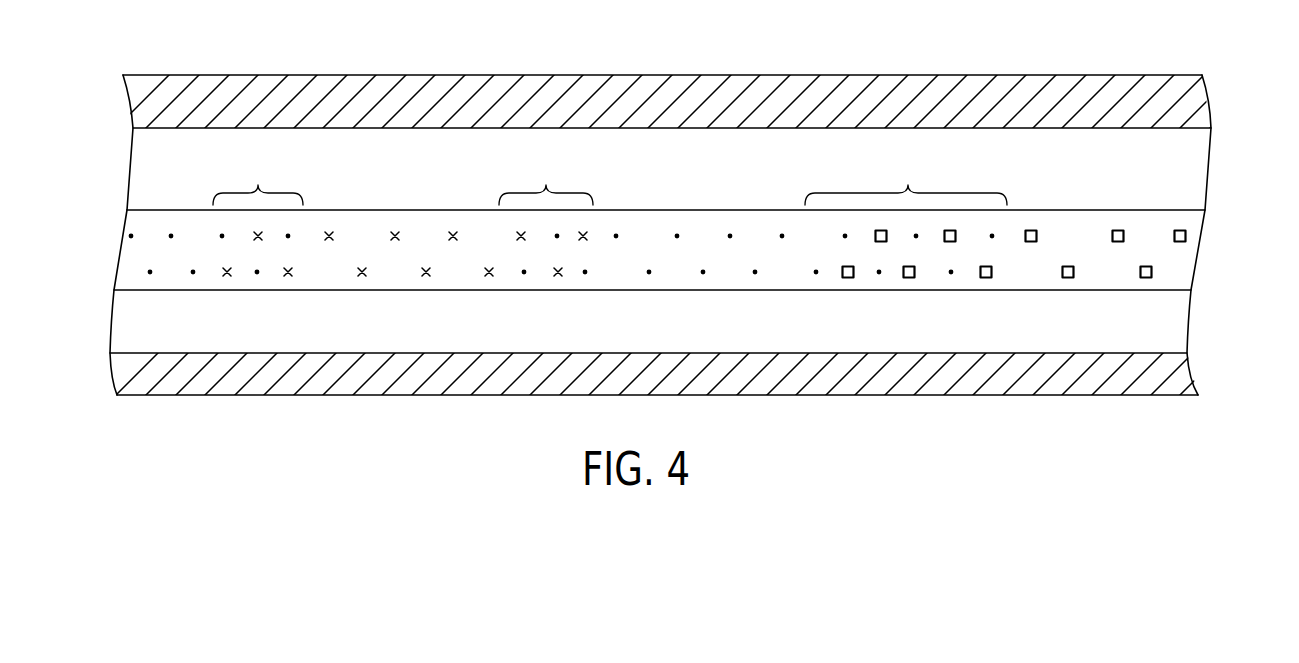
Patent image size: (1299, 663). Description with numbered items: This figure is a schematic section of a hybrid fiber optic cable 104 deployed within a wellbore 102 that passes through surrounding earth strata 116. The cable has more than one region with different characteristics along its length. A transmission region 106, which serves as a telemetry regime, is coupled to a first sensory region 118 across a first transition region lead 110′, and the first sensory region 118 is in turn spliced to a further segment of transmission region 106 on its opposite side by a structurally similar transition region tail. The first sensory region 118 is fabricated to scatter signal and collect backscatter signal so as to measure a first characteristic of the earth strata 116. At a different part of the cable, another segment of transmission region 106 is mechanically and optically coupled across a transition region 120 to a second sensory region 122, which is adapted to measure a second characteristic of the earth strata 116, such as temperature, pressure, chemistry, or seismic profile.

The wellbore 102 is at (1222, 129).
The hybrid fiber optic cable 104 is at (108, 210).
The transmission region 106 is at (170, 272).
The first transition region lead 110′ is at (276, 158).
The earth strata 116 is at (684, 85).
The first sensory region 118 is at (397, 272).
The transition region 120 is at (906, 179).
The second sensory region 122 is at (1107, 272).